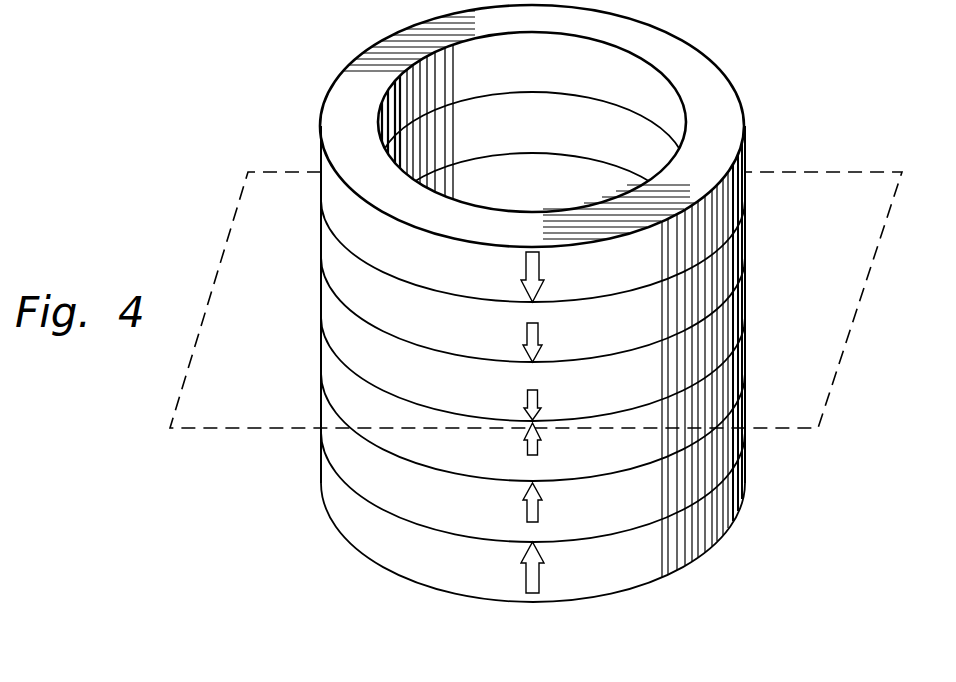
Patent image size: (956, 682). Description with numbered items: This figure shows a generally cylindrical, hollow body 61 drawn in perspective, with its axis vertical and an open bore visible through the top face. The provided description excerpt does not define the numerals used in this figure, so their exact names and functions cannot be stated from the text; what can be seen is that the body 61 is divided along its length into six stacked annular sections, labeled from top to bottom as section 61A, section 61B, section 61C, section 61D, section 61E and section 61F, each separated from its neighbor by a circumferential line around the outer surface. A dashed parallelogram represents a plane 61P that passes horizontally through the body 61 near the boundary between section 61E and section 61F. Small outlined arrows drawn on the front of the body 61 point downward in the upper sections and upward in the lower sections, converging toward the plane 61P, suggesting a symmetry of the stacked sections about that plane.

The glass laminate tube (cylindrical body) 61 is at (299, 40).
The first glass layer 61A is at (321, 155).
The second glass layer 61B is at (321, 223).
The third glass layer 61C is at (321, 282).
The fourth glass layer 61D is at (321, 342).
The fifth glass layer 61E is at (321, 402).
The sixth glass layer 61F is at (321, 462).
The cutting plane 61P is at (224, 247).